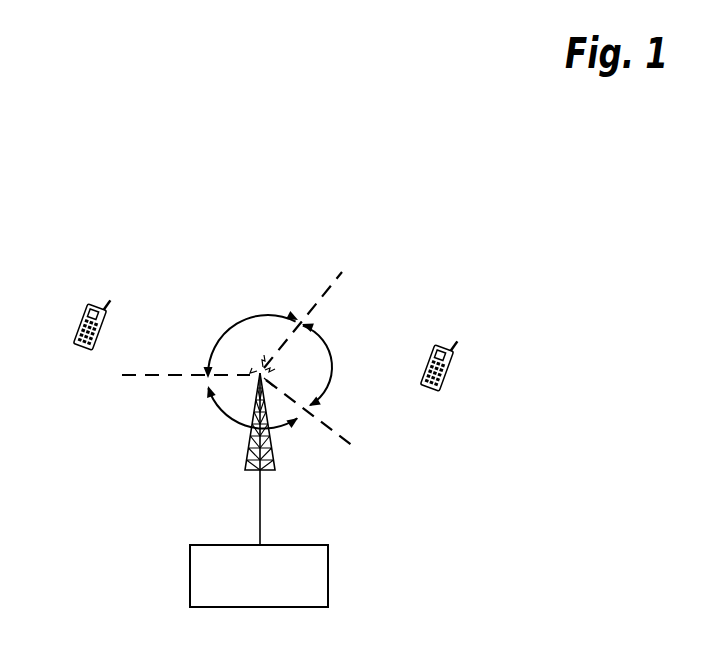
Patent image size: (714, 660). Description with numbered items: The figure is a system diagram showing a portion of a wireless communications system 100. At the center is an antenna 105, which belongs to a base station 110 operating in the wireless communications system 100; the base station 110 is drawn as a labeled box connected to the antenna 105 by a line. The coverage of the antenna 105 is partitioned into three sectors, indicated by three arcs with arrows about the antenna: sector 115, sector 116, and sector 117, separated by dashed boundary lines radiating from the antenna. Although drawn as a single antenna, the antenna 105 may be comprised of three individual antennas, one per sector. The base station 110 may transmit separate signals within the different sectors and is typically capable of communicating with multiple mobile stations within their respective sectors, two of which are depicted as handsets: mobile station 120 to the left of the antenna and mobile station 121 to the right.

The wireless communications system 100 is at (359, 179).
The antenna 105 is at (245, 463).
The base station 110 is at (328, 571).
The sector 115 is at (251, 336).
The sector 116 is at (241, 410).
The sector 117 is at (339, 365).
The mobile station 120 is at (80, 322).
The mobile station 121 is at (449, 373).